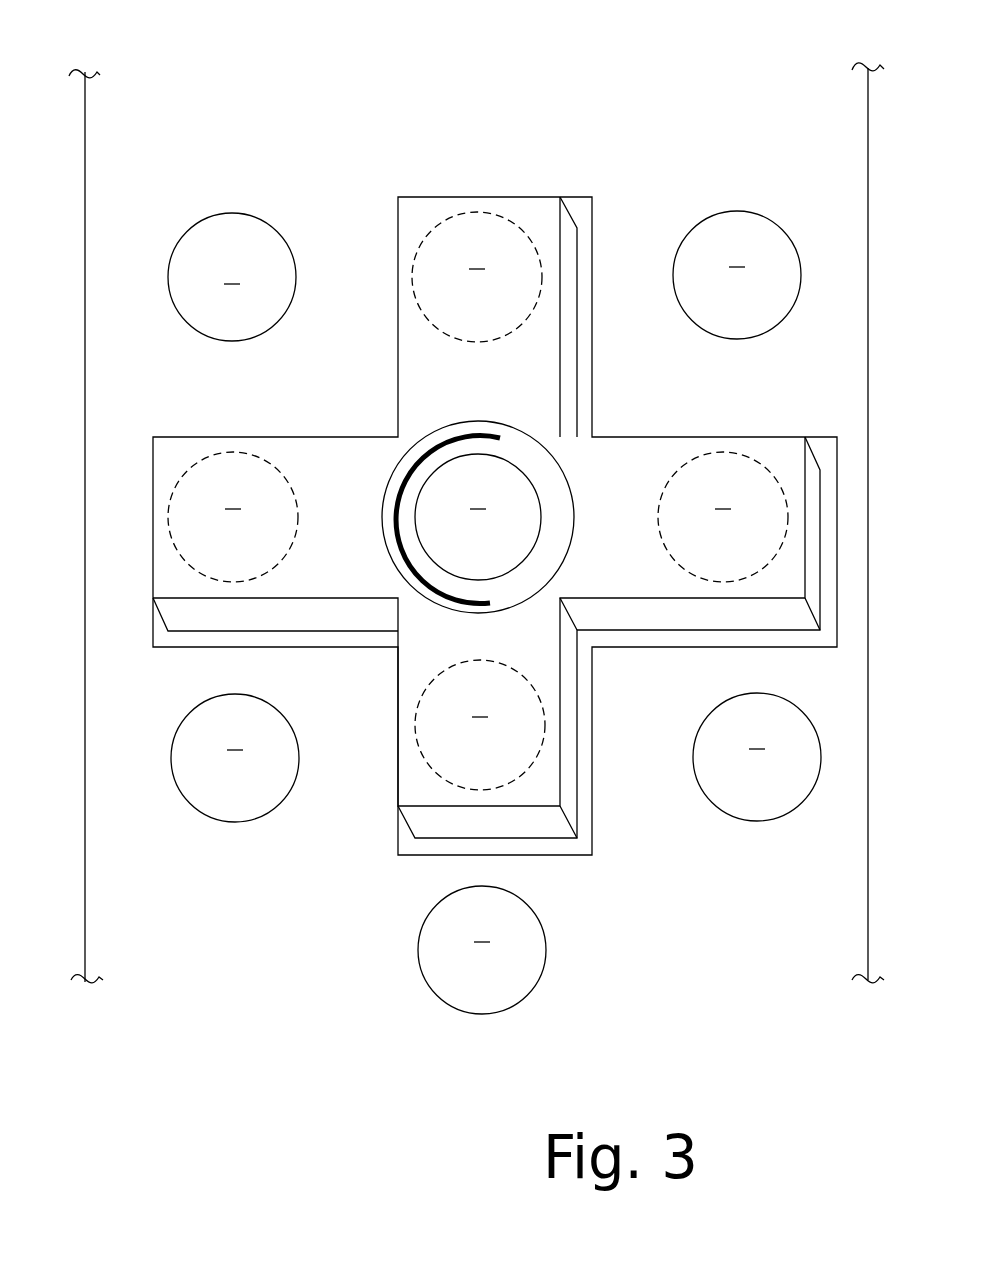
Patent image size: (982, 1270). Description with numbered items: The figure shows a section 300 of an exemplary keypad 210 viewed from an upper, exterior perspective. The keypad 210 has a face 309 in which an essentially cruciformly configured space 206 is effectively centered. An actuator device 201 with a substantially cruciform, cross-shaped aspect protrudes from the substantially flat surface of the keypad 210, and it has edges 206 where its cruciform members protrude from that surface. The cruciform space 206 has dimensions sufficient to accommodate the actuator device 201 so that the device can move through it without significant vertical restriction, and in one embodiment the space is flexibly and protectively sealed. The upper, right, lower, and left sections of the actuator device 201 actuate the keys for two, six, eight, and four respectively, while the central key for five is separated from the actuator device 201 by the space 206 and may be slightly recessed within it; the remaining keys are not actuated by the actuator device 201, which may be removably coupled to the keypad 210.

The section 300 is at (127, 29).
The face 309 is at (148, 149).
The keypad 210 is at (82, 248).
The actuator device 201 is at (462, 388).
The edges 206 is at (414, 470).